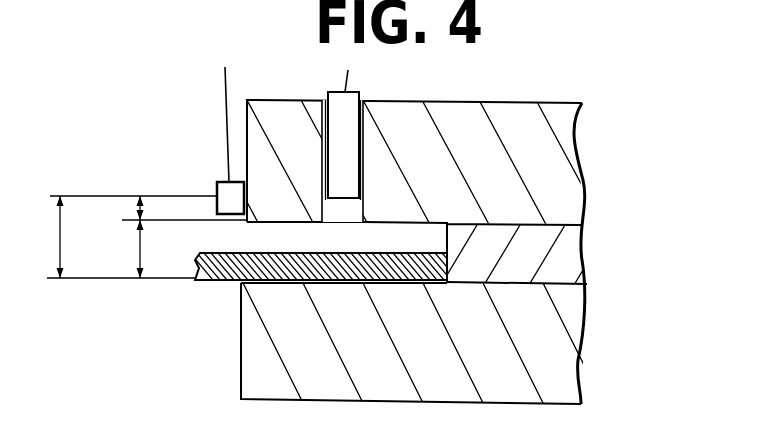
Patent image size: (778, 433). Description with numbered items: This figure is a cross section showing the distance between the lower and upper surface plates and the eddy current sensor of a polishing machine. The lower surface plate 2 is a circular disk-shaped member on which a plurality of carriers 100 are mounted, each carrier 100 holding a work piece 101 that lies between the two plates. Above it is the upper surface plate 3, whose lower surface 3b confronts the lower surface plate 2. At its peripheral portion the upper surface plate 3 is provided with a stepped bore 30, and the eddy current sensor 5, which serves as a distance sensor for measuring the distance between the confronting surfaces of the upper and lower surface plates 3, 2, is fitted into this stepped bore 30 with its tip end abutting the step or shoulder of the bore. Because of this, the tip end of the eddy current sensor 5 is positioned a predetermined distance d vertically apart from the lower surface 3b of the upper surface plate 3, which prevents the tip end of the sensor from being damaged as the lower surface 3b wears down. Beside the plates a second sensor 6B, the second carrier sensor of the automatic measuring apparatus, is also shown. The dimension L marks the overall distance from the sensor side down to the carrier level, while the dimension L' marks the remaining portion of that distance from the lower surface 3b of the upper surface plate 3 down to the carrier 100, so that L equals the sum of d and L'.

The lower surface plate 2 is at (552, 340).
The upper surface plate 3 is at (430, 247).
The lower surface of the upper surface plate 3b is at (382, 224).
The eddy current sensor 5 is at (285, 137).
The stepped bore 30 is at (323, 170).
The second sensor 6B is at (217, 179).
The carrier 100 is at (214, 281).
The work piece 101 is at (562, 253).
The dimension L is at (132, 237).
The predetermined distance d is at (140, 200).
The dimension L' is at (117, 265).